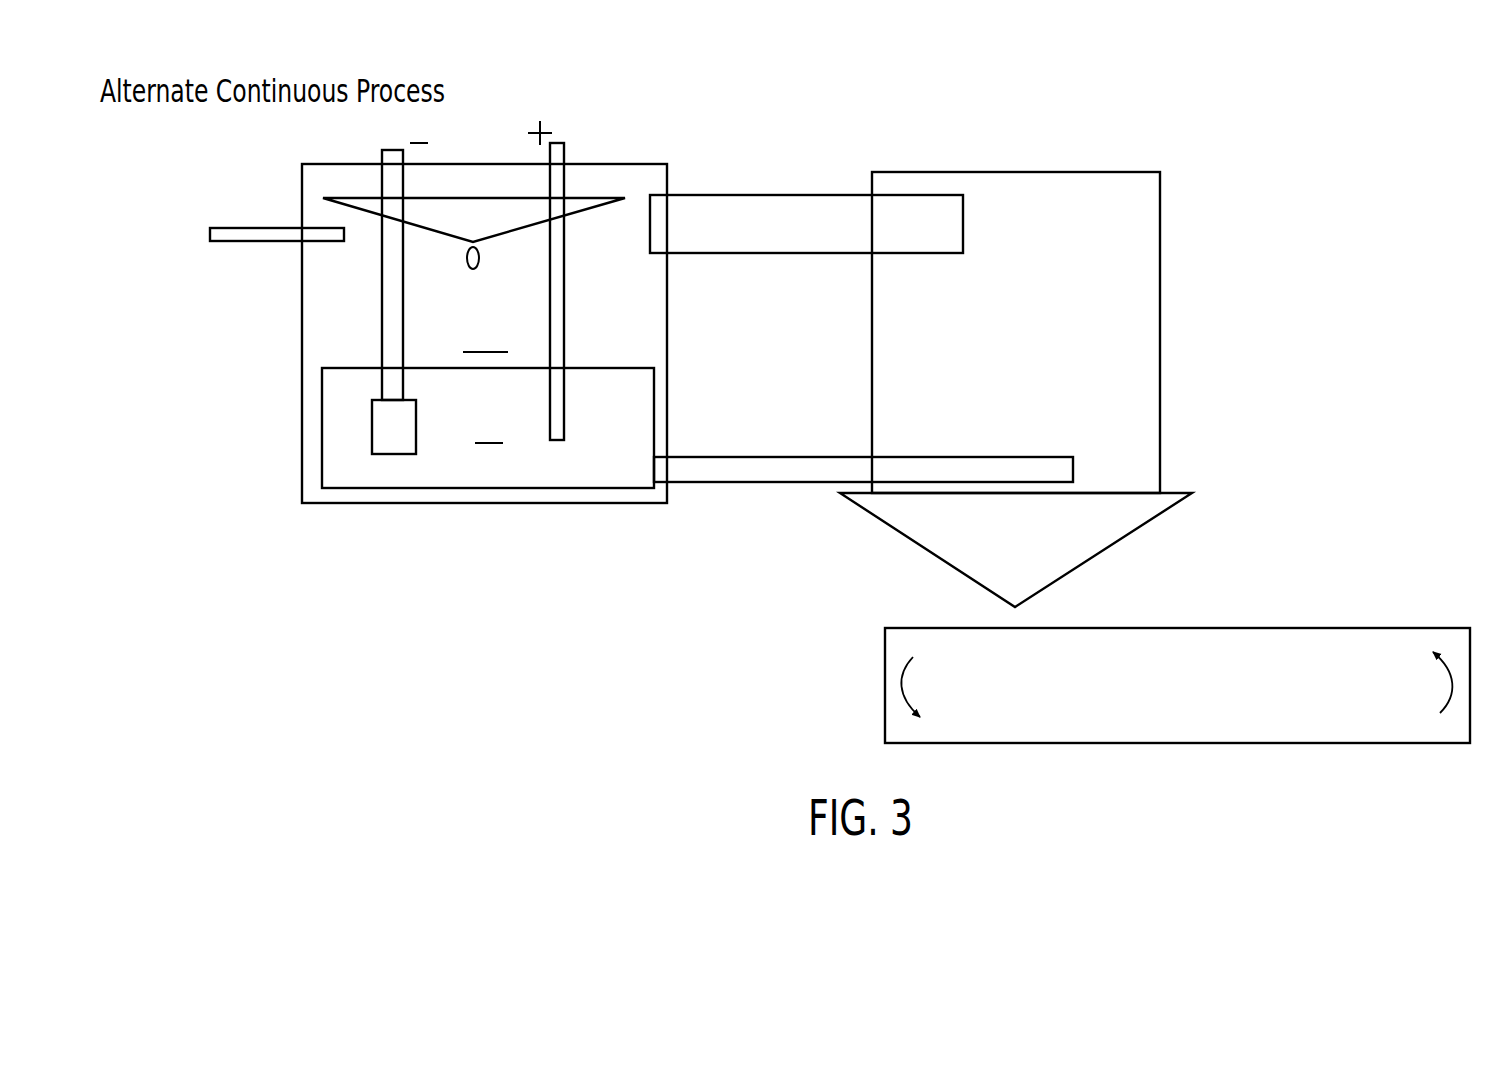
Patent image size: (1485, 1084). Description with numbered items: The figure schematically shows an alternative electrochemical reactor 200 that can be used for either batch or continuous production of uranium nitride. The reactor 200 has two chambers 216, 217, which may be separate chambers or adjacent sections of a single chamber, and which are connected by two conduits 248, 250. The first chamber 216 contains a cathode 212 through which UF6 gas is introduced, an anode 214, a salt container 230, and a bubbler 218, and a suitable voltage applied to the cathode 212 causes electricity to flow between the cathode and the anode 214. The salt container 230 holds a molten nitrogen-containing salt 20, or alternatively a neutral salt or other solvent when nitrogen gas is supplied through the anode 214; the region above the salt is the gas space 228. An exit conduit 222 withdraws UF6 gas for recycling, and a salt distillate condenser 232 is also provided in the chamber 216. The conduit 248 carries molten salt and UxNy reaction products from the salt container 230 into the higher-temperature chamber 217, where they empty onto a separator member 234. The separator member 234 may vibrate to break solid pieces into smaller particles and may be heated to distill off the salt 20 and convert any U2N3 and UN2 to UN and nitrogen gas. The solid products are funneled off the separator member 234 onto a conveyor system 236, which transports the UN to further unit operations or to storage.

The alternative electrochemical reactor 200 is at (1203, 117).
The cathode 212 is at (382, 298).
The anode 214 is at (564, 330).
The chamber 216 is at (667, 330).
The chamber 217 is at (1160, 307).
The bubbler 218 is at (372, 425).
The salt 20 is at (489, 427).
The exit conduit 222 is at (262, 228).
The gas space 228 is at (485, 336).
The salt container 230 is at (654, 412).
The salt distillate condenser 232 is at (473, 198).
The separator member 234 is at (1105, 552).
The conveyor system 236 is at (1303, 628).
The conduit 248 is at (767, 482).
The conduit 250 is at (795, 195).